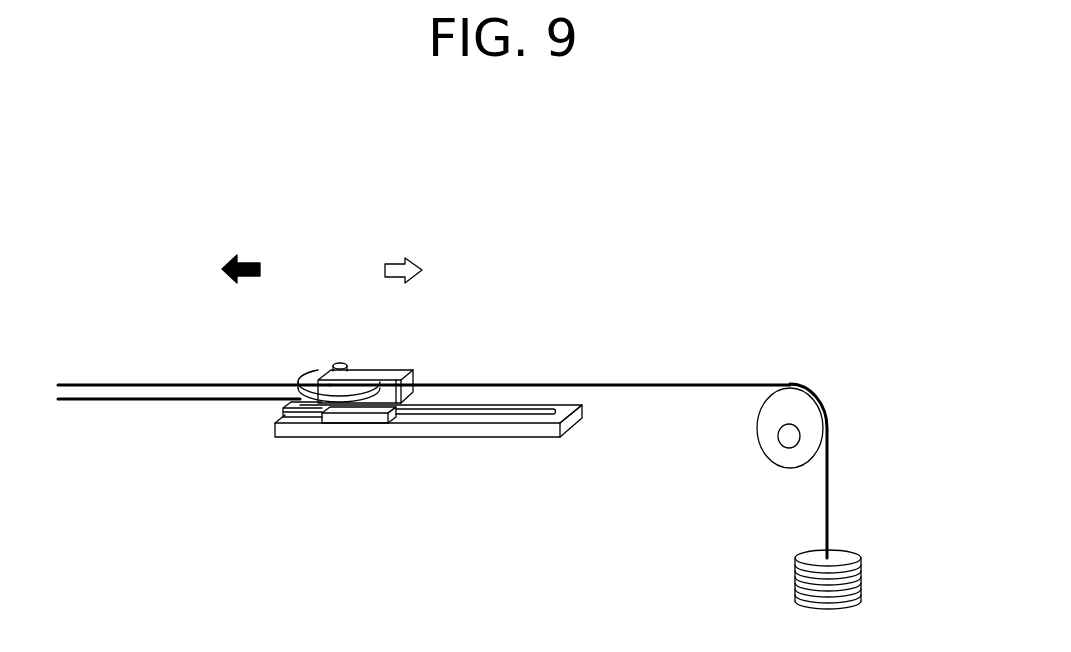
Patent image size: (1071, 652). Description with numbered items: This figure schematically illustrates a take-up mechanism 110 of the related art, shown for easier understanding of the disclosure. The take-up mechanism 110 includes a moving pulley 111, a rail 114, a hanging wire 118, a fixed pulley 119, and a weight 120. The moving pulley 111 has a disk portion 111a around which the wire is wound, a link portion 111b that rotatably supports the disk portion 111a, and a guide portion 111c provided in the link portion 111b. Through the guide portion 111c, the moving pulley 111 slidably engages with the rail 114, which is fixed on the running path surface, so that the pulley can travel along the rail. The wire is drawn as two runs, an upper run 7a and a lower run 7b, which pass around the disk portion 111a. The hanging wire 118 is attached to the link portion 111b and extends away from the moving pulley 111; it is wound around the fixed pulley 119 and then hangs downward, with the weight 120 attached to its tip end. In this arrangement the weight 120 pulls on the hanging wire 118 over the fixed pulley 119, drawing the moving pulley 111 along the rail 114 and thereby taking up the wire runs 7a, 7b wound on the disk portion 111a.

The first conductor (wire 7) 7a is at (132, 385).
The second conductor (wire 7) 7b is at (105, 399).
The take-up mechanism 110 is at (503, 457).
The moving pulley 111 is at (400, 360).
The disk portion 111a is at (318, 372).
The link portion 111b is at (413, 384).
The guide portion 111c is at (333, 415).
The rail 114 is at (405, 432).
The hanging wire 118 is at (698, 385).
The fixed pulley 119 is at (812, 413).
The weight 120 is at (862, 575).